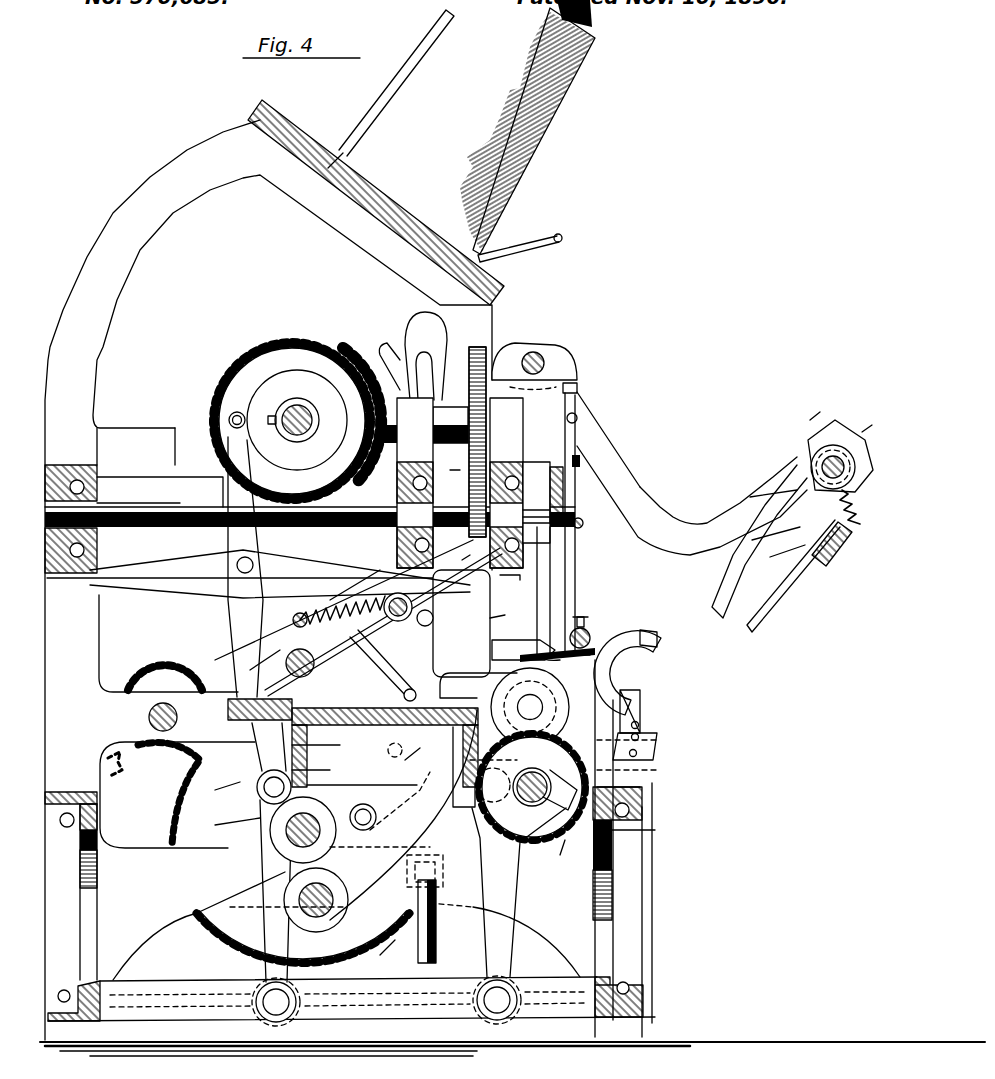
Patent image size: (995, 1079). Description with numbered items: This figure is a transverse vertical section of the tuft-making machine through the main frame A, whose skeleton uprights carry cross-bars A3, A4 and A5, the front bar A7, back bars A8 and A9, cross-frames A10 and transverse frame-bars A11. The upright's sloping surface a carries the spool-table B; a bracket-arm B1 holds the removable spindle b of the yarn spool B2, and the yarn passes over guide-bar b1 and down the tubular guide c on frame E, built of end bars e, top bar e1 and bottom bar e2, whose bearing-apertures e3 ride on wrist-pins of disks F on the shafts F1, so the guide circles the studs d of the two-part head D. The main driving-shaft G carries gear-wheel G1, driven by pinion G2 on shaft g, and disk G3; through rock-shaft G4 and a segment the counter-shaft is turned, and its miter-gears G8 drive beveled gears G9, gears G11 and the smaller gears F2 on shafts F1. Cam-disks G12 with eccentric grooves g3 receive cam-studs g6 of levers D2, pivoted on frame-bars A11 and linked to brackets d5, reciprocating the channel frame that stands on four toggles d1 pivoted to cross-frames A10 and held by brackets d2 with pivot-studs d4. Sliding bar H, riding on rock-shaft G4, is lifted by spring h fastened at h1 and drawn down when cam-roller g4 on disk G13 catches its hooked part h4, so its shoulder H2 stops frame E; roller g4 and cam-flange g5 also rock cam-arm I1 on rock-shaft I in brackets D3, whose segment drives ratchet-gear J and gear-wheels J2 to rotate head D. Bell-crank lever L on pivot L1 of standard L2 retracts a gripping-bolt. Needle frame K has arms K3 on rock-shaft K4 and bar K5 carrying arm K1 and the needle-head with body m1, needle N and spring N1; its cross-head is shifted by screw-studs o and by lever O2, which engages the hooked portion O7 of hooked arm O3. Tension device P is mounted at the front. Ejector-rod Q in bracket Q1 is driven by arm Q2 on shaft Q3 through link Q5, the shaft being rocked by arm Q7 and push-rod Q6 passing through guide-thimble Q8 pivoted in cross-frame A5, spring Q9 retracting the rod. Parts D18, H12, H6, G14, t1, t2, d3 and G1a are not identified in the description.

The main frame A is at (135, 263).
The frame bracket A3 is at (125, 430).
The shaft bearing A8 is at (85, 470).
The frame cross bar A11 is at (190, 580).
The frame panel A4 is at (108, 658).
The lower frame plate A5 is at (140, 815).
The frame upright A9 is at (90, 905).
The base A10 is at (210, 1005).
The right frame upright A7 is at (600, 890).
The bearing block D18 is at (630, 830).
The inclined plate B is at (398, 245).
The plate edge a is at (318, 150).
The guide rod B1 is at (400, 86).
The brush B2 is at (568, 110).
The brush head b is at (592, 14).
The brush lever b1 is at (532, 262).
The main shaft F is at (560, 530).
The gear wheel G12 is at (228, 360).
The gear hub G1 is at (297, 404).
The key g3 is at (320, 426).
The crank pin g6 is at (228, 420).
The connecting rod D2 is at (240, 615).
The cam lever G8 is at (405, 345).
The cam arm G9 is at (395, 370).
The pinion G11 is at (495, 342).
The hub block H is at (445, 590).
The bearing lever F1 is at (150, 532).
The bearing block F2 is at (488, 565).
The link rod H12 is at (345, 533).
The link block H6 is at (514, 590).
The collar G14 is at (455, 461).
The bracket K4 is at (560, 352).
The pawl c is at (577, 392).
The vertical bar E is at (575, 585).
The slide bar e is at (575, 555).
The pivot pin e1 is at (578, 508).
The stop e3 is at (580, 462).
The pivot screw e2 is at (588, 632).
The lever P is at (602, 440).
The curved arm K3 is at (620, 470).
The head block K is at (818, 432).
The head pin K5 is at (840, 455).
The spring N1 is at (856, 515).
The clamp block m1 is at (826, 566).
The arm N is at (762, 620).
The curved link K1 is at (725, 620).
The rod O2 is at (760, 498).
The rod link o is at (760, 540).
The stop piece O7 is at (657, 638).
The hook O3 is at (645, 630).
The slide block t2 is at (635, 695).
The slide plate t1 is at (650, 740).
The guide L1 is at (640, 755).
The guide bar L2 is at (635, 780).
The cam lever L is at (570, 718).
The ratchet disk D is at (515, 628).
The ratchet gear J is at (540, 845).
The pawl J2 is at (564, 852).
The connecting rod d1 is at (510, 955).
The pivot d3 is at (277, 1022).
The connecting rod d is at (262, 955).
The pivot ring d4 is at (262, 790).
The lug d5 is at (232, 712).
The arm d2 is at (290, 760).
The housing Q is at (340, 732).
The pin Q5 is at (398, 735).
The link h1 is at (415, 753).
The gear hub G3 is at (340, 752).
The pin g4 is at (355, 808).
The hidden arm g5 is at (375, 830).
The shaft hub I is at (347, 900).
The arm I1 is at (199, 911).
The large gear G is at (240, 875).
The slide bar D3 is at (436, 925).
The slide box Q8 is at (443, 880).
The gear segment Q6 is at (389, 958).
The gear shaft g is at (149, 717).
The gear G2 is at (123, 766).
The gear G1a is at (172, 782).
The link h4 is at (217, 791).
The gear arm G13 is at (227, 823).
The gear arm G4 is at (249, 663).
The lever Q1 is at (448, 640).
The pivot Q3 is at (412, 605).
The link Q2 is at (400, 652).
The link h is at (355, 593).
The spring Q9 is at (296, 630).
The arm Q7 is at (499, 615).
The block H2 is at (466, 551).